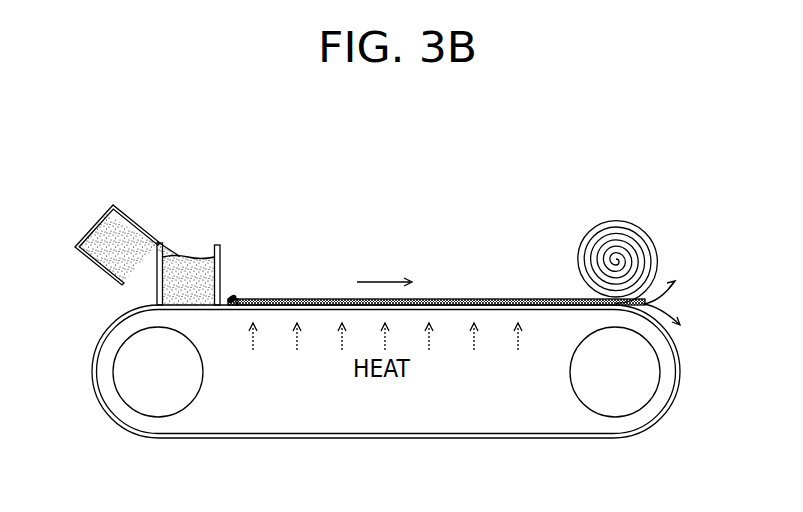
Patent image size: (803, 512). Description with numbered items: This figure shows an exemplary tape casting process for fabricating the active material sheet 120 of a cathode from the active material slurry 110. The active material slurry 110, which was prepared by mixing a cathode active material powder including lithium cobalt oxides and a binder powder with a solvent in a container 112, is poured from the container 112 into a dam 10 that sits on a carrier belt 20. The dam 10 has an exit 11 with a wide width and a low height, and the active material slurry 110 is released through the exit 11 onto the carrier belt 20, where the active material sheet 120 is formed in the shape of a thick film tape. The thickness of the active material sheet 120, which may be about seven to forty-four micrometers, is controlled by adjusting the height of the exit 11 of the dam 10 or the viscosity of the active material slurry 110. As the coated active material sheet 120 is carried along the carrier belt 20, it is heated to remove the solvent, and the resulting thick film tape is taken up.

The dam 10 is at (222, 248).
The exit 11 is at (236, 297).
The carrier belt 20 is at (227, 312).
The active material slurry 110 is at (195, 257).
The container 112 is at (92, 222).
The active material sheet 120 is at (537, 301).